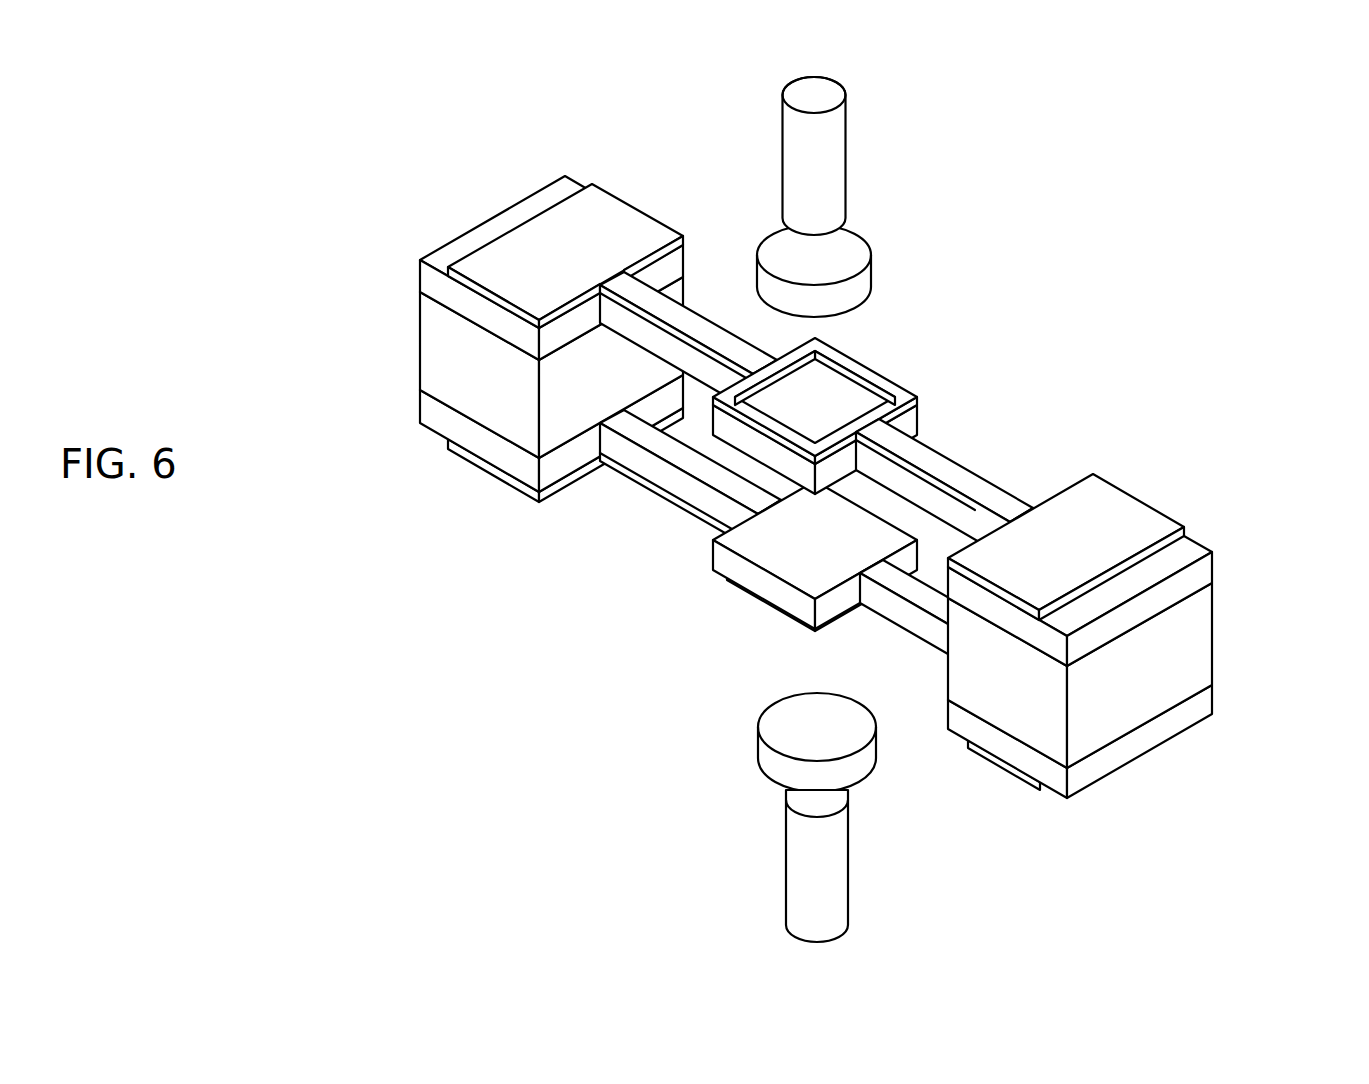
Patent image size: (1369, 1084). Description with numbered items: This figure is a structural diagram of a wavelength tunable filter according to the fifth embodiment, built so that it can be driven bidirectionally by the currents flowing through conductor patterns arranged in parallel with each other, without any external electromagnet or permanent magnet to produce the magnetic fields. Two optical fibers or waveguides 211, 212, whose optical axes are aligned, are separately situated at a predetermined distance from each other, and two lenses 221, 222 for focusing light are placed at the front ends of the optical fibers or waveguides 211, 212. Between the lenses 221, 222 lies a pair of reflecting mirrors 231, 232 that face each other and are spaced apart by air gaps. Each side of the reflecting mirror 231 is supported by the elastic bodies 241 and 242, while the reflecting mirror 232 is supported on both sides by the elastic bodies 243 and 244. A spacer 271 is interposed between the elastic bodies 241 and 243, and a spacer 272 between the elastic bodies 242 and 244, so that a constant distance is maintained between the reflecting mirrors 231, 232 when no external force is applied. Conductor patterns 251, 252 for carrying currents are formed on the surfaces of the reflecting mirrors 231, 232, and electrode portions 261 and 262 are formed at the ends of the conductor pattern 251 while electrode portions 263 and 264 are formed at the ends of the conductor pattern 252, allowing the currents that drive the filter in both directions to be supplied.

The optical fiber or waveguide 211 is at (820, 150).
The optical fiber or waveguide 212 is at (800, 875).
The lens 221 is at (865, 285).
The lens 222 is at (785, 770).
The reflecting mirror 231 is at (843, 392).
The reflecting mirror 232 is at (775, 550).
The elastic body 241 is at (672, 352).
The elastic body 242 is at (898, 482).
The elastic body 243 is at (665, 480).
The elastic body 244 is at (880, 622).
The conductor pattern 251 is at (972, 472).
The conductor pattern 252 is at (620, 475).
The electrode portion 261 is at (530, 252).
The electrode portion 262 is at (1130, 548).
The electrode portion 263 is at (490, 470).
The electrode portion 264 is at (975, 760).
The spacer 271 is at (445, 360).
The spacer 272 is at (1200, 640).